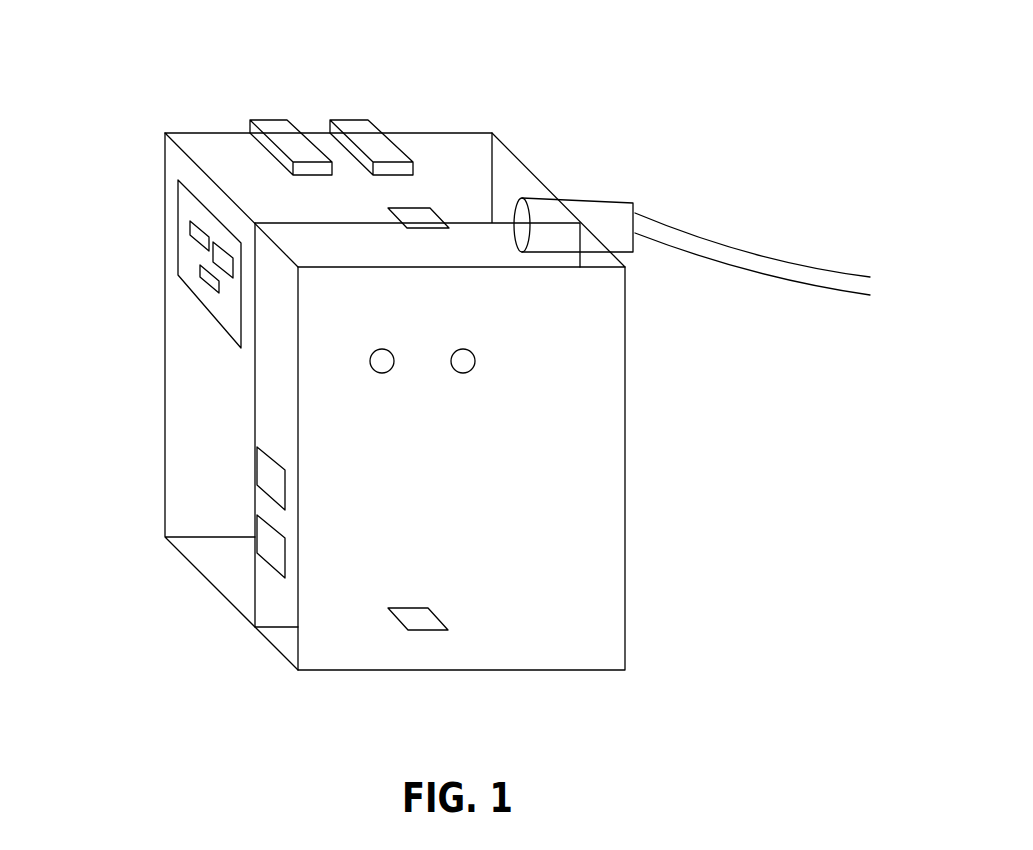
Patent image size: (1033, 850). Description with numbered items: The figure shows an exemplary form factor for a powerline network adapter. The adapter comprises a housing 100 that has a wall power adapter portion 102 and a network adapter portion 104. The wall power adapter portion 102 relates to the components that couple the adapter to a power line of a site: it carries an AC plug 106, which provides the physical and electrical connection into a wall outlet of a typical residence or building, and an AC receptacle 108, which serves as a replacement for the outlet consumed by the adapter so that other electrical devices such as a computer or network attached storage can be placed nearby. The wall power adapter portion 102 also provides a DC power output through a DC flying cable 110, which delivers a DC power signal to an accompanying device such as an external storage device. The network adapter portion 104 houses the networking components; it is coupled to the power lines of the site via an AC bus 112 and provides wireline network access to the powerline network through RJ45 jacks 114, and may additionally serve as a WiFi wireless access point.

The housing 100 is at (580, 120).
The wall power adapter portion 102 is at (440, 124).
The network adapter portion 104 is at (590, 619).
The AC plug 106 is at (304, 104).
The AC receptacle 108 is at (178, 256).
The DC flying cable 110 is at (717, 232).
The AC bus 112 is at (363, 380).
The RJ45 jacks 114 is at (267, 543).